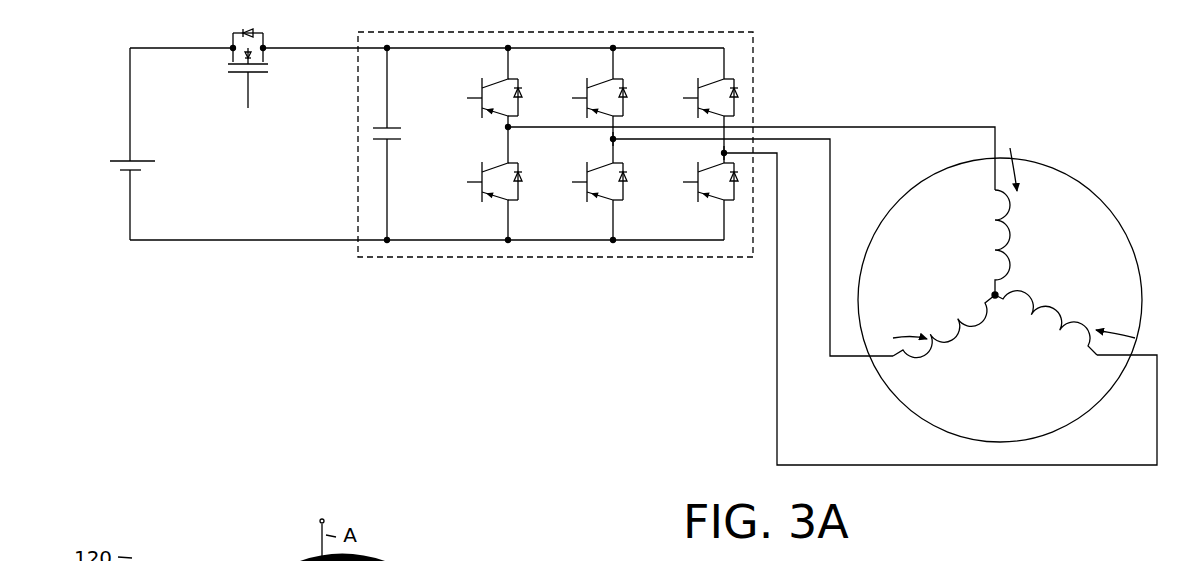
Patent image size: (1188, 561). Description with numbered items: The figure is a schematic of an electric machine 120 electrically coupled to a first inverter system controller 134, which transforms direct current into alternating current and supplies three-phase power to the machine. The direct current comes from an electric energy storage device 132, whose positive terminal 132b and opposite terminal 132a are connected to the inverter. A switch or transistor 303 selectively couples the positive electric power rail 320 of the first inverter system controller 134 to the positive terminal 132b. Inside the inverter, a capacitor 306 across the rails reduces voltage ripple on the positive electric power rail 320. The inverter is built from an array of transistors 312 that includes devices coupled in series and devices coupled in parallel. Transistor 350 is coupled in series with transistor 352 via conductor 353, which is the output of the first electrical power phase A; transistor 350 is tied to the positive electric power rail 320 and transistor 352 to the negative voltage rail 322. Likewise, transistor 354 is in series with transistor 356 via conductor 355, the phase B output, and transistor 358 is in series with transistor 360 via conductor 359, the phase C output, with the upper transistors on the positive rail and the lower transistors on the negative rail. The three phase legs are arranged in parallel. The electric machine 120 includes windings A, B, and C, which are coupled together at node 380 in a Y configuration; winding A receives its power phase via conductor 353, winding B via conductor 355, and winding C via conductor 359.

The electric machine 120 is at (1087, 187).
The electric energy storage device 132 is at (119, 162).
The battery negative terminal 132a is at (133, 172).
The positive terminal 132b is at (133, 159).
The first inverter system controller 134 is at (754, 32).
The switch or transistor 303 is at (271, 36).
The capacitor 306 is at (392, 119).
The array of transistors 312 is at (490, 72).
The positive electric power rail 320 is at (519, 50).
The negative voltage rail 322 is at (528, 240).
The transistor 350 is at (489, 105).
The transistor 352 is at (489, 190).
The conductor 353 is at (508, 150).
The transistor 354 is at (586, 106).
The conductor 355 is at (611, 139).
The transistor 356 is at (586, 184).
The transistor 358 is at (698, 103).
The conductor 359 is at (723, 153).
The transistor 360 is at (697, 183).
The node 380 is at (998, 293).